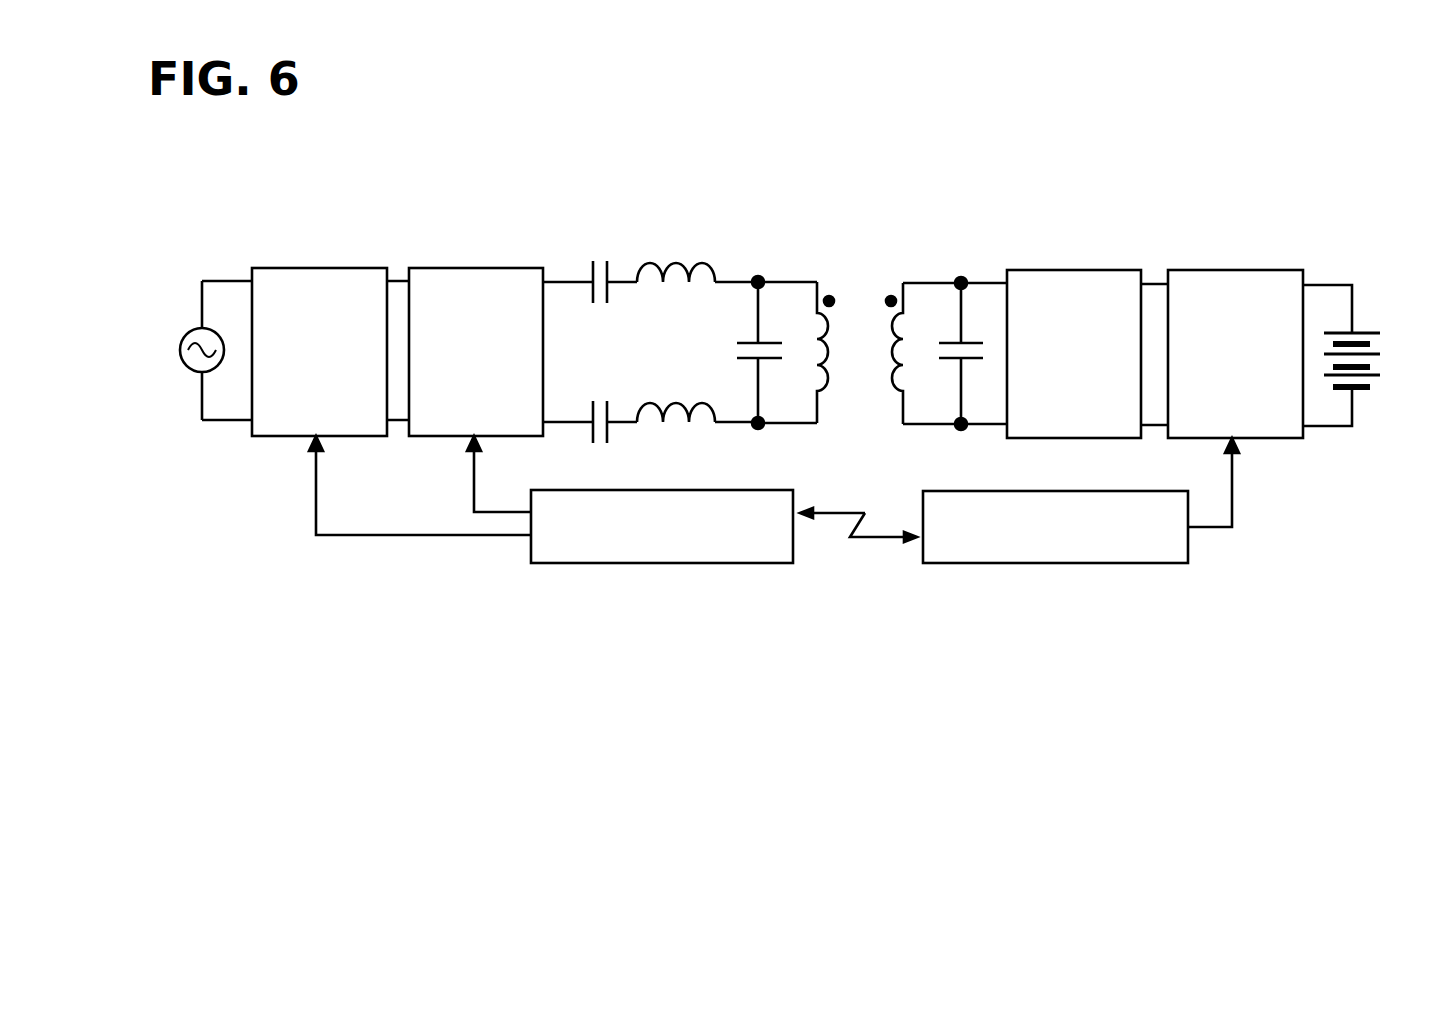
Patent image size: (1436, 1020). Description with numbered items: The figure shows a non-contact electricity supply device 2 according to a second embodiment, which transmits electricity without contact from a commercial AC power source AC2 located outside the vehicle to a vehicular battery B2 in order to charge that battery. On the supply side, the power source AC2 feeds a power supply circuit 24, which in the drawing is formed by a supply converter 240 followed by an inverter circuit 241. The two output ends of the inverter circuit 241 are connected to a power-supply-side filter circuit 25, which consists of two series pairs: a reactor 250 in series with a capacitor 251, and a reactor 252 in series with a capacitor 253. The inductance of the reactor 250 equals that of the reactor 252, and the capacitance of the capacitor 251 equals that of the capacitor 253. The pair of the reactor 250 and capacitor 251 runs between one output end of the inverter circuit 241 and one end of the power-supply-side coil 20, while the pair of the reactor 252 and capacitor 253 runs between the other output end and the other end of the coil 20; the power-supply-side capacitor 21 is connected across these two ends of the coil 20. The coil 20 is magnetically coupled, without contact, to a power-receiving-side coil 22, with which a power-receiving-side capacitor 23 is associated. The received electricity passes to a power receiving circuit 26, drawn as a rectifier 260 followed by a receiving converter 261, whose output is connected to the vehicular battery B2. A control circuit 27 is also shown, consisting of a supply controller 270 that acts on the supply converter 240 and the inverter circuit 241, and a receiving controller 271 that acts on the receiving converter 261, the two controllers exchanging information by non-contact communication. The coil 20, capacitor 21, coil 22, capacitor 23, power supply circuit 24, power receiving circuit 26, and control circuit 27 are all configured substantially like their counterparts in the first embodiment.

The non-contact electricity supply device 2 is at (1141, 135).
The power supply circuit 24 is at (410, 209).
The supply converter 240 is at (322, 268).
The inverter circuit 241 is at (482, 268).
The power-supply-side filter circuit 25 is at (654, 243).
The reactor 250 is at (674, 290).
The capacitor 251 is at (601, 310).
The reactor 252 is at (681, 428).
The capacitor 253 is at (602, 446).
The power-supply-side coil 20 is at (826, 284).
The power-supply-side capacitor 21 is at (743, 365).
The power-receiving-side coil 22 is at (893, 288).
The power-receiving-side capacitor 23 is at (967, 364).
The power receiving circuit 26 is at (1163, 235).
The rectifier 260 is at (1083, 270).
The receiving converter 261 is at (1236, 270).
The supply controller 270 is at (684, 565).
The receiving controller 271 is at (1021, 566).
The control circuit 27 is at (859, 590).
The commercial power source AC2 is at (185, 330).
The vehicular battery B2 is at (1352, 330).